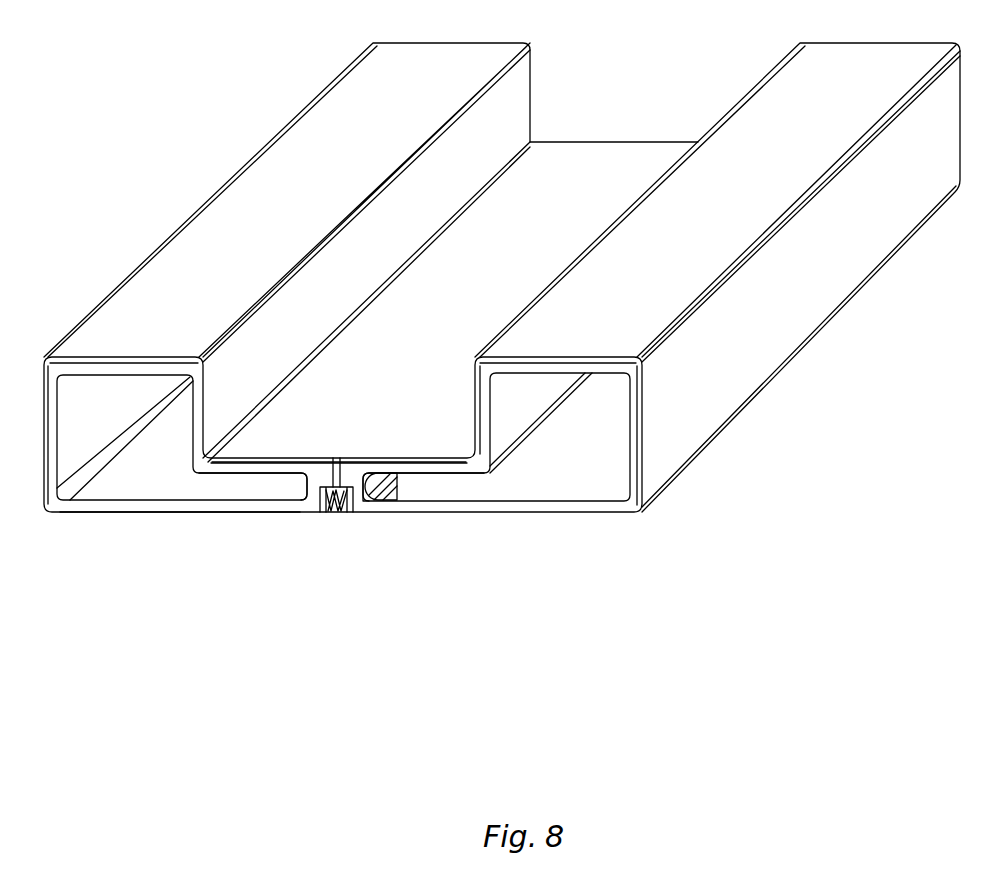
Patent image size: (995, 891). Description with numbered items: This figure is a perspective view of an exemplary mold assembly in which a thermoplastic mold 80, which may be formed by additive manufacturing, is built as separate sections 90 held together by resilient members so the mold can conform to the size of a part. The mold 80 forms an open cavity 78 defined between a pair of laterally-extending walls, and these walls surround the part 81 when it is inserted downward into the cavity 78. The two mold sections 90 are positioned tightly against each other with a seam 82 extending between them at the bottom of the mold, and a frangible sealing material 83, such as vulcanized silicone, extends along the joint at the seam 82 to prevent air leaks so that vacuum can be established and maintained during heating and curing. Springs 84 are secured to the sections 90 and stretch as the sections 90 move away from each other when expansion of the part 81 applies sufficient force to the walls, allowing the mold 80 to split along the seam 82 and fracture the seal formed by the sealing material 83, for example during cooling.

The cavity 78 is at (606, 85).
The mold 80 is at (160, 500).
The part 81 is at (360, 397).
The seam 82 is at (370, 500).
The sealing material 83 is at (348, 512).
The springs 84 is at (330, 512).
The sections 90 is at (228, 467).